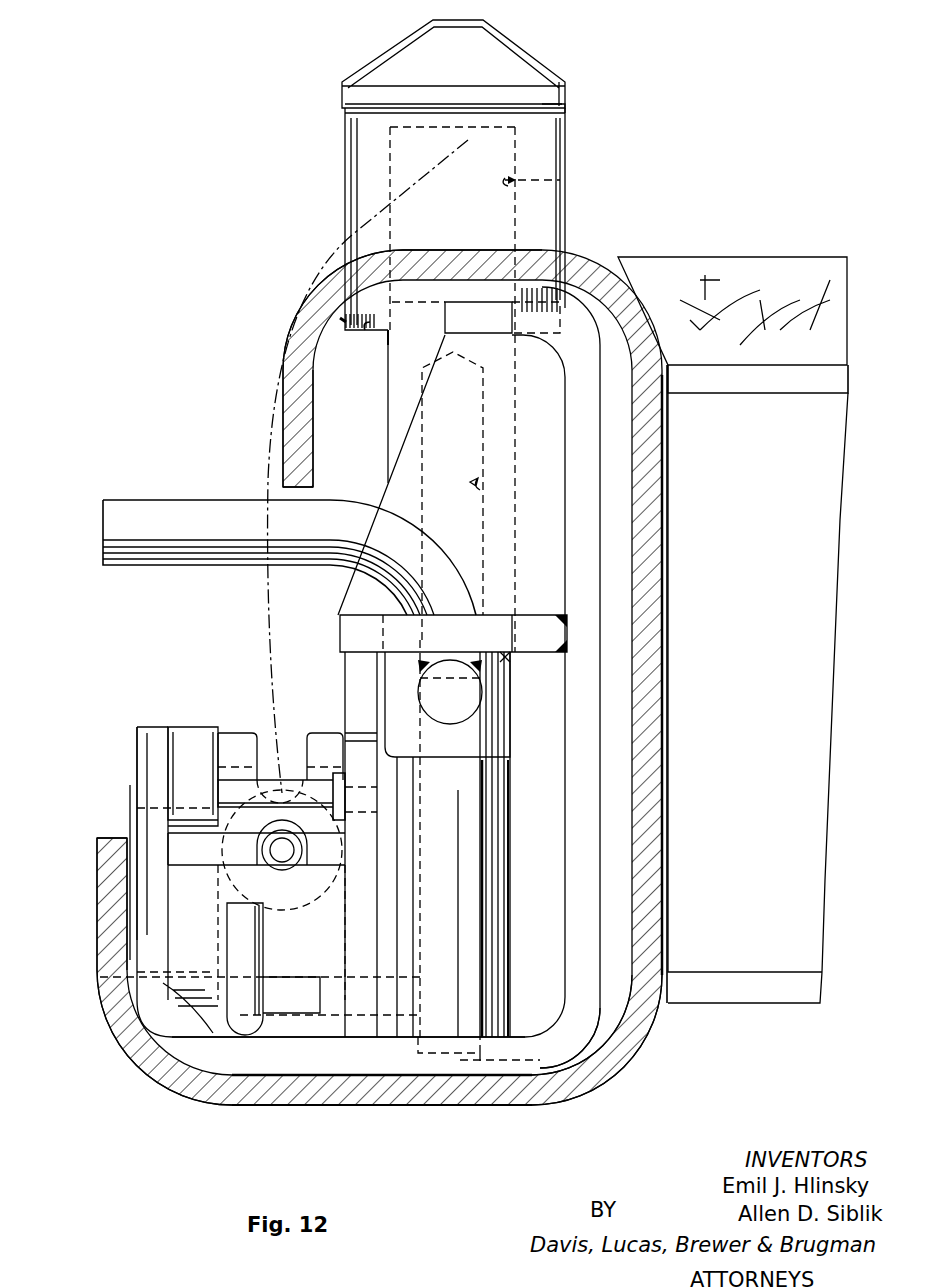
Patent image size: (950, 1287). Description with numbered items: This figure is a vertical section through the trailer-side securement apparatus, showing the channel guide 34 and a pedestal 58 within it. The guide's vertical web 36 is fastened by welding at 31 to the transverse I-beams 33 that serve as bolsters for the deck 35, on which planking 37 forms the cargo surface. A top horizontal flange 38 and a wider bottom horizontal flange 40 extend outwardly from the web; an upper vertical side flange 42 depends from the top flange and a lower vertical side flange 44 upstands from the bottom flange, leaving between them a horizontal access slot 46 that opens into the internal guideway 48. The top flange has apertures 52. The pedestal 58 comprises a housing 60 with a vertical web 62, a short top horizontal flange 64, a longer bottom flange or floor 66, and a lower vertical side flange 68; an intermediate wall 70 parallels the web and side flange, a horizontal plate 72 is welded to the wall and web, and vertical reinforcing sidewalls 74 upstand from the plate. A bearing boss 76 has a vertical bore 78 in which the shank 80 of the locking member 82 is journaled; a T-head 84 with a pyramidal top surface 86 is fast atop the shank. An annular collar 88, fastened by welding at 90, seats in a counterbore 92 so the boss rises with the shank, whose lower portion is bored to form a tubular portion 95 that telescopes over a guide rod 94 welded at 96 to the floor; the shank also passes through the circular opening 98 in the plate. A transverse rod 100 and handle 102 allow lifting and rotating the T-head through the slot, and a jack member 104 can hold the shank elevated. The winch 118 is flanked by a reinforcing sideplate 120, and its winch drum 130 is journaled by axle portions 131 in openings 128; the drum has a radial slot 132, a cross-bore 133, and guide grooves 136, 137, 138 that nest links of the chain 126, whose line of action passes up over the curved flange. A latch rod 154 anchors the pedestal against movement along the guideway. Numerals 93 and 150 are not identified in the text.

The welding 31 is at (667, 489).
The transverse I-beams 33 is at (786, 547).
The channel guide 34 is at (140, 1068).
The deck 35 is at (752, 258).
The vertical web 36 is at (662, 673).
The planking 37 is at (745, 301).
The top horizontal flange 38 is at (440, 251).
The bottom horizontal flange 40 is at (480, 1095).
The upper vertical side flange 42 is at (288, 392).
The lower vertical side flange 44 is at (97, 925).
The horizontal access slot 46 is at (258, 650).
The internal guideway 48 is at (618, 1000).
The apertures 52 is at (335, 258).
The pedestal 58 is at (342, 617).
The housing 60 is at (588, 1048).
The vertical web 62 is at (578, 806).
The top horizontal flange 64 is at (486, 303).
The bottom horizontal flange 66 is at (300, 1062).
The lower vertical side flange 68 is at (140, 803).
The intermediate wall 70 is at (345, 668).
The horizontal plate 72 is at (540, 615).
The vertical reinforcing sidewalls 74 is at (400, 440).
The bearing boss 76 is at (346, 152).
The vertical bore 78 is at (560, 180).
The shank 80 is at (388, 392).
The locking member 82 is at (567, 108).
The T-head 84 is at (558, 88).
The pyramidal top surface 86 is at (398, 57).
The annular collar 88 is at (343, 322).
The welding 90 is at (390, 334).
The counterbore 92 is at (372, 330).
The foot 93 is at (418, 1052).
The guide rod 94 is at (498, 870).
The shank lower tubular portion 95 is at (503, 745).
The welding 96 is at (482, 1064).
The circular opening 98 is at (512, 648).
The transverse rod 100 is at (447, 738).
The handle 102 is at (140, 505).
The jack member 104 is at (500, 937).
The winch 118 is at (228, 725).
The reinforcing sideplate 120 is at (210, 925).
The chain 126 is at (270, 442).
The openings 128 is at (166, 790).
The winch drum 130 is at (250, 735).
The axle portions 131 is at (142, 775).
The radial slot 132 is at (230, 849).
The cross-bore 133 is at (293, 862).
The guide groove 136 is at (280, 776).
The guide groove 137 is at (327, 794).
The guide groove 138 is at (273, 969).
The block 150 is at (188, 732).
The latch rod 154 is at (285, 1018).